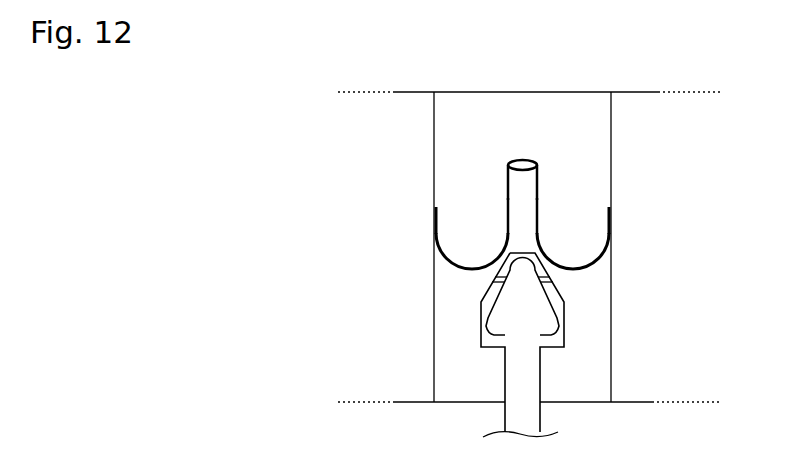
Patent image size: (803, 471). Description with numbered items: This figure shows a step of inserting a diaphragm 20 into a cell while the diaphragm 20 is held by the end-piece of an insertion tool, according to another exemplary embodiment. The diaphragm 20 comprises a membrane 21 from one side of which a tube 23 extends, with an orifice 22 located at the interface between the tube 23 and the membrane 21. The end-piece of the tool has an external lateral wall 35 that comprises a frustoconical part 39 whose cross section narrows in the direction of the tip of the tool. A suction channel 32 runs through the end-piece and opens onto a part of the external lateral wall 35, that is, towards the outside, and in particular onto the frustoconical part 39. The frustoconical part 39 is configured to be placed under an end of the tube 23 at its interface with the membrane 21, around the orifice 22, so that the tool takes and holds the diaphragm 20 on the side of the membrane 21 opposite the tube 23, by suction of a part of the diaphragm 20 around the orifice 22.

The diaphragm 20 is at (588, 272).
The membrane 21 is at (612, 232).
The orifice 22 is at (528, 232).
The tube 23 is at (538, 196).
The suction channel 32 is at (512, 281).
The external lateral wall 35 is at (577, 323).
The frustoconical part 39 is at (475, 283).